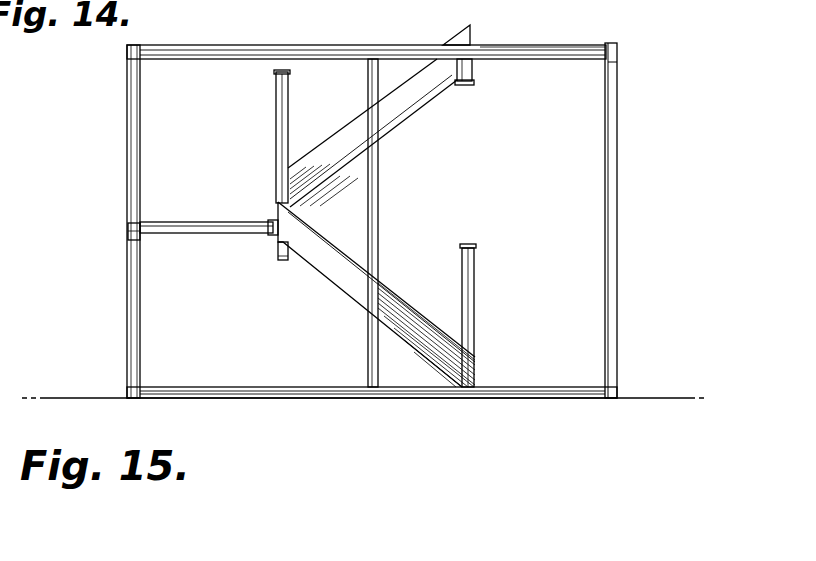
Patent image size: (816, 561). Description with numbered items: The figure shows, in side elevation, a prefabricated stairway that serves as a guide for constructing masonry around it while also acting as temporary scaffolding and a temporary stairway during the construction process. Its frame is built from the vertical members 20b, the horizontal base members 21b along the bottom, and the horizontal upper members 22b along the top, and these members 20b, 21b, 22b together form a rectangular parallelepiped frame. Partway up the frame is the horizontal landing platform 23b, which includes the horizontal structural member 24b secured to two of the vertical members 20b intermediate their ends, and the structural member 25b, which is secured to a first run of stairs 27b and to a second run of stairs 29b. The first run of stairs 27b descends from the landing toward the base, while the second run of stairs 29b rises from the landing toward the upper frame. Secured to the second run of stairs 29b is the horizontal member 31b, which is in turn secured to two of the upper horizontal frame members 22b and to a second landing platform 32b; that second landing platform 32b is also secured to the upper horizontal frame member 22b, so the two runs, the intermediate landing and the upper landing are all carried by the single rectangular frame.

The vertical members 20b is at (127, 295).
The horizontal base members 21b is at (257, 402).
The horizontal upper members 22b is at (332, 45).
The horizontal landing platform 23b is at (207, 233).
The horizontal structural member 24b is at (128, 232).
The structural member 25b is at (272, 238).
The first run of stairs 27b is at (350, 283).
The second run of stairs 29b is at (405, 103).
The horizontal member 31b is at (472, 63).
The second landing platform 32b is at (538, 38).